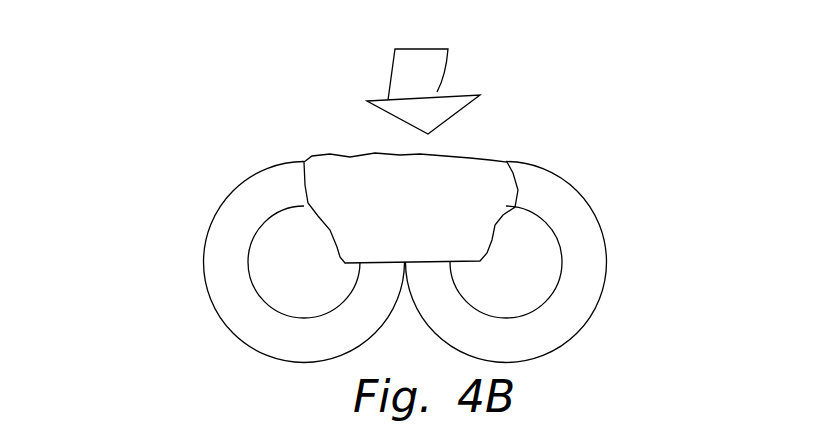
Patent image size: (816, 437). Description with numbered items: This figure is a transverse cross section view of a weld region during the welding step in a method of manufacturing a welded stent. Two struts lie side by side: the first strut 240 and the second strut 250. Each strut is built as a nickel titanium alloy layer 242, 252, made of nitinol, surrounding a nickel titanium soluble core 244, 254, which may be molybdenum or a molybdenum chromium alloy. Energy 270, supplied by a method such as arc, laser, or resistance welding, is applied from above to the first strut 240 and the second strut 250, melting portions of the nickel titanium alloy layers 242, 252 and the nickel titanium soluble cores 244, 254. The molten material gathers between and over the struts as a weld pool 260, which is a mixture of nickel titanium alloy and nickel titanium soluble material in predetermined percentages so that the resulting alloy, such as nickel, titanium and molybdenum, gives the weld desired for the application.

The first strut 240 is at (252, 165).
The nickel titanium alloy layer 242 is at (228, 233).
The nickel titanium soluble core 244 is at (297, 279).
The second strut 250 is at (605, 197).
The nickel titanium alloy layer 252 is at (586, 258).
The nickel titanium soluble core 254 is at (507, 288).
The weld pool 260 is at (465, 172).
The energy 270 is at (422, 68).